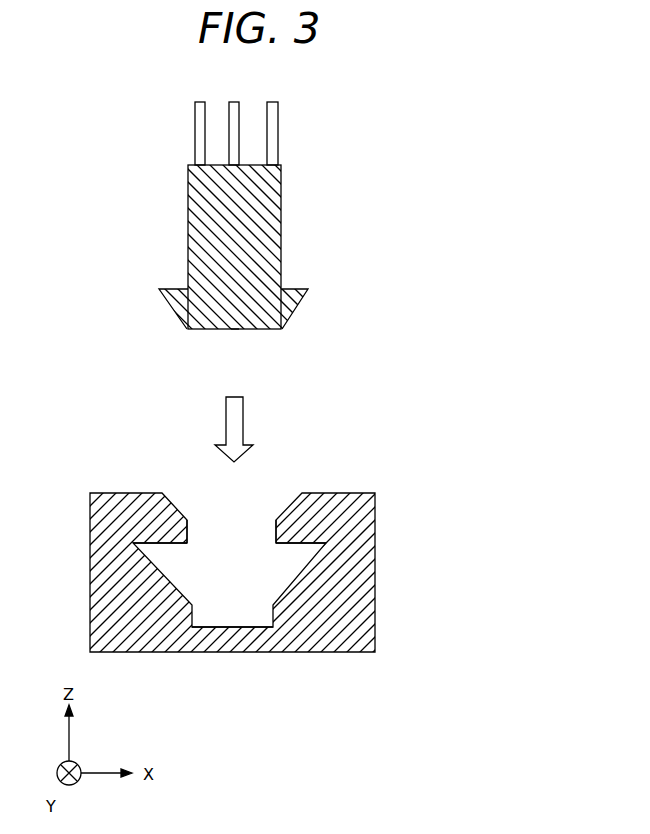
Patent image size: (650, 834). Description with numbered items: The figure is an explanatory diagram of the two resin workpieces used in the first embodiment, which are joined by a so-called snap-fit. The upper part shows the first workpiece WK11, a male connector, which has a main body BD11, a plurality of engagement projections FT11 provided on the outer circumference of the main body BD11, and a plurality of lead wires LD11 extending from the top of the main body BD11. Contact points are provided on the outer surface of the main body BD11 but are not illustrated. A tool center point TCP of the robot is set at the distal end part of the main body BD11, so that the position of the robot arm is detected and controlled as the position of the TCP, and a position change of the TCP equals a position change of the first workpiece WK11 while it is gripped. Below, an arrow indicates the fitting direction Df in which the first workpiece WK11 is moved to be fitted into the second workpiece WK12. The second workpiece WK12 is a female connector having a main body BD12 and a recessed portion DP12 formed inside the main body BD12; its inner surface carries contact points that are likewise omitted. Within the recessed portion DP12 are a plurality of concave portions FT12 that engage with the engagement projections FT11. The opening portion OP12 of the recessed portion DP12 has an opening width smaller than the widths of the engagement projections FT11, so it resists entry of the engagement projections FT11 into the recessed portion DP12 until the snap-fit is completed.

The lead wires LD11 is at (278, 123).
The first workpiece WK11 is at (242, 242).
The main body BD11 is at (281, 243).
The engagement projections FT11 is at (166, 302).
The tool center point TCP is at (235, 329).
The fitting direction Df is at (249, 429).
The second workpiece WK12 is at (268, 586).
The opening portion OP12 is at (232, 526).
The concave portions FT12 is at (303, 557).
The recessed portion DP12 is at (237, 610).
The main body BD12 is at (307, 652).